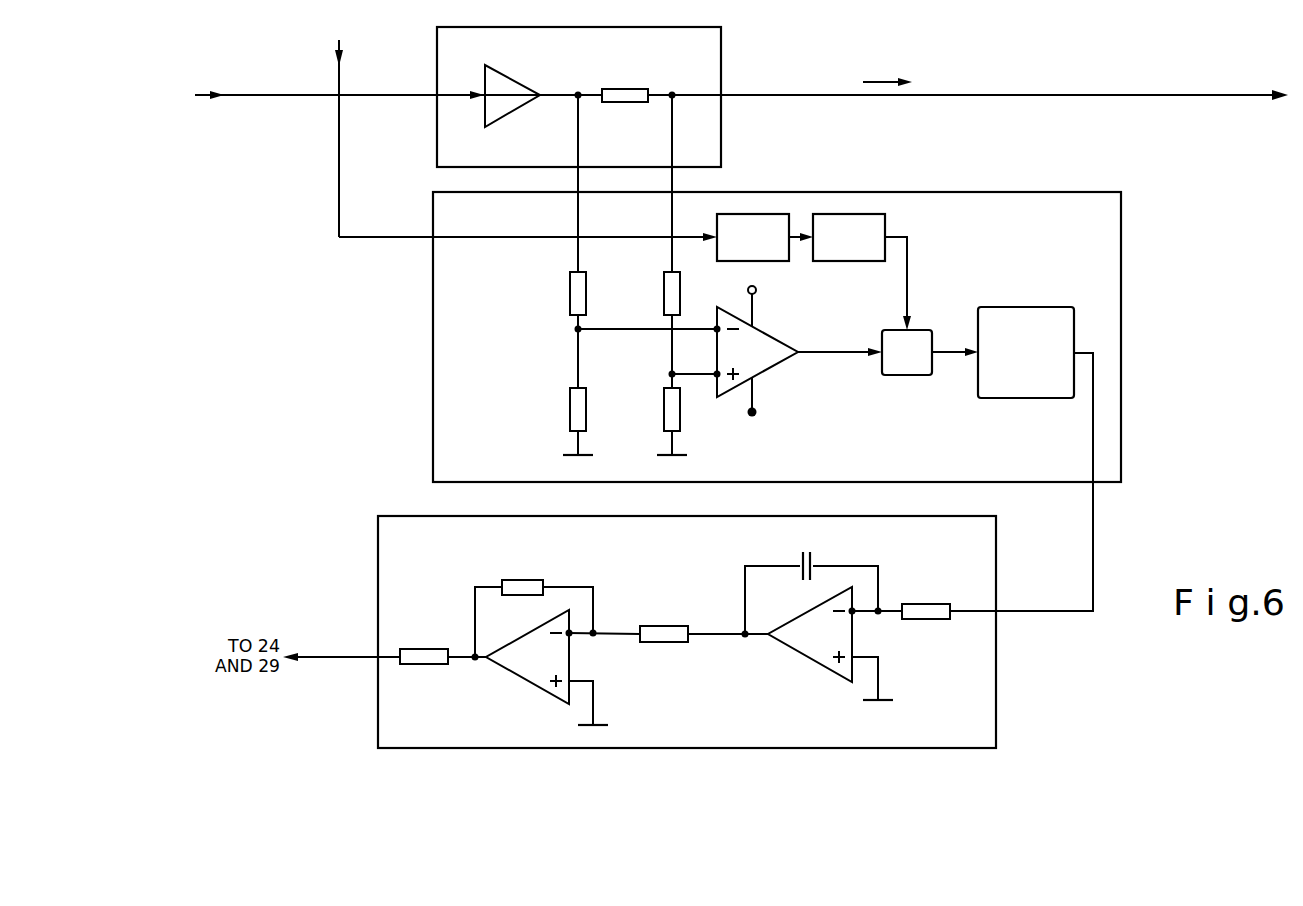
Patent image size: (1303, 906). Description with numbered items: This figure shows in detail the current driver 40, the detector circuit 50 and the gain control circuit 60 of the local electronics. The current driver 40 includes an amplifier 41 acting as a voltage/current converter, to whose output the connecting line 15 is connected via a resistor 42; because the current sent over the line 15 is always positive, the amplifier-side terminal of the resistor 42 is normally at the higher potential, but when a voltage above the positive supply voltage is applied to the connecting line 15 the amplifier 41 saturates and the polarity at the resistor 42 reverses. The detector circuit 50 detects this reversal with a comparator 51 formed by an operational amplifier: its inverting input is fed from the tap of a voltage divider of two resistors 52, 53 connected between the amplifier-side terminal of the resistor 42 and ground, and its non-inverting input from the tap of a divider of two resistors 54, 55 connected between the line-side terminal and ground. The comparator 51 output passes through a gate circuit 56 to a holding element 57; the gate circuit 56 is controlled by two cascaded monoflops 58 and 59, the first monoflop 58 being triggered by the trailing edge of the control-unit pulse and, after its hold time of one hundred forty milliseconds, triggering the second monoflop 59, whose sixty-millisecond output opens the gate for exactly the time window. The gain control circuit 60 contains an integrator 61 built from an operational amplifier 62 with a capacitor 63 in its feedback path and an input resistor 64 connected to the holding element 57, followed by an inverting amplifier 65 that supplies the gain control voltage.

The connecting line 15 is at (1058, 97).
The current driver 40 is at (713, 39).
The amplifier 41 is at (513, 105).
The resistor 42 is at (633, 102).
The detector circuit 50 is at (435, 322).
The comparator 51 is at (776, 373).
The resistor 52 is at (567, 292).
The resistor 53 is at (567, 412).
The resistor 54 is at (662, 292).
The resistor 55 is at (662, 412).
The gate circuit 56 is at (917, 333).
The holding element 57 is at (1026, 313).
The monoflop 58 is at (717, 220).
The monoflop 59 is at (880, 224).
The gain control circuit 60 is at (382, 570).
The integrator 61 is at (777, 665).
The operational amplifier 62 is at (826, 660).
The capacitor 63 is at (813, 551).
The resistor 64 is at (935, 604).
The inverting amplifier 65 is at (507, 693).